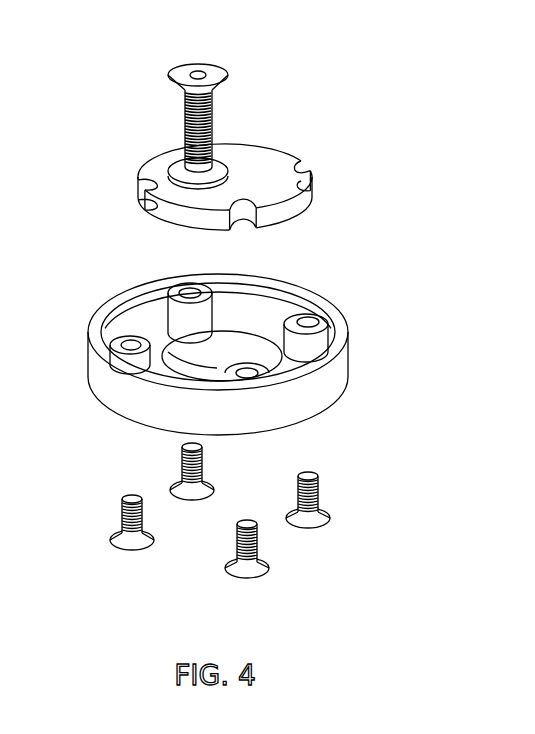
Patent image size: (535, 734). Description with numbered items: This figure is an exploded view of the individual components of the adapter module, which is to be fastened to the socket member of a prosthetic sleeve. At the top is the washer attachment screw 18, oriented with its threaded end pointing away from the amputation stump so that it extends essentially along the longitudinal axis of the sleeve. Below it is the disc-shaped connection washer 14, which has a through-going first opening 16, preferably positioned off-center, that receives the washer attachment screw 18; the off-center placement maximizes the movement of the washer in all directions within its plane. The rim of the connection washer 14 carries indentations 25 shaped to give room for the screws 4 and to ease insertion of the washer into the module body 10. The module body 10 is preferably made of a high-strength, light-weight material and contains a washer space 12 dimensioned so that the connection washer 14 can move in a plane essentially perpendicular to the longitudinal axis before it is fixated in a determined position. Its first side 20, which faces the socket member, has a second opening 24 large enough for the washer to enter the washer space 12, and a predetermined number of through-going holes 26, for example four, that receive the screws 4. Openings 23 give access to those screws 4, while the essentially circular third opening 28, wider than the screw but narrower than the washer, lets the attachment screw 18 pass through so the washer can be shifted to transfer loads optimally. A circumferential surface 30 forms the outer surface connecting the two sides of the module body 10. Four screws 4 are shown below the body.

The screws 4 is at (203, 470).
The module body 10 is at (325, 385).
The washer space 12 is at (228, 338).
The connection washer 14 is at (265, 167).
The first opening 16 is at (200, 183).
The washer attachment screw 18 is at (202, 122).
The first side 20 is at (328, 316).
The openings 23 is at (195, 337).
The second opening 24 is at (243, 293).
The indentations 25 is at (253, 223).
The through-going holes 26 is at (190, 293).
The third opening 28 is at (198, 368).
The circumferential surface 30 is at (227, 415).